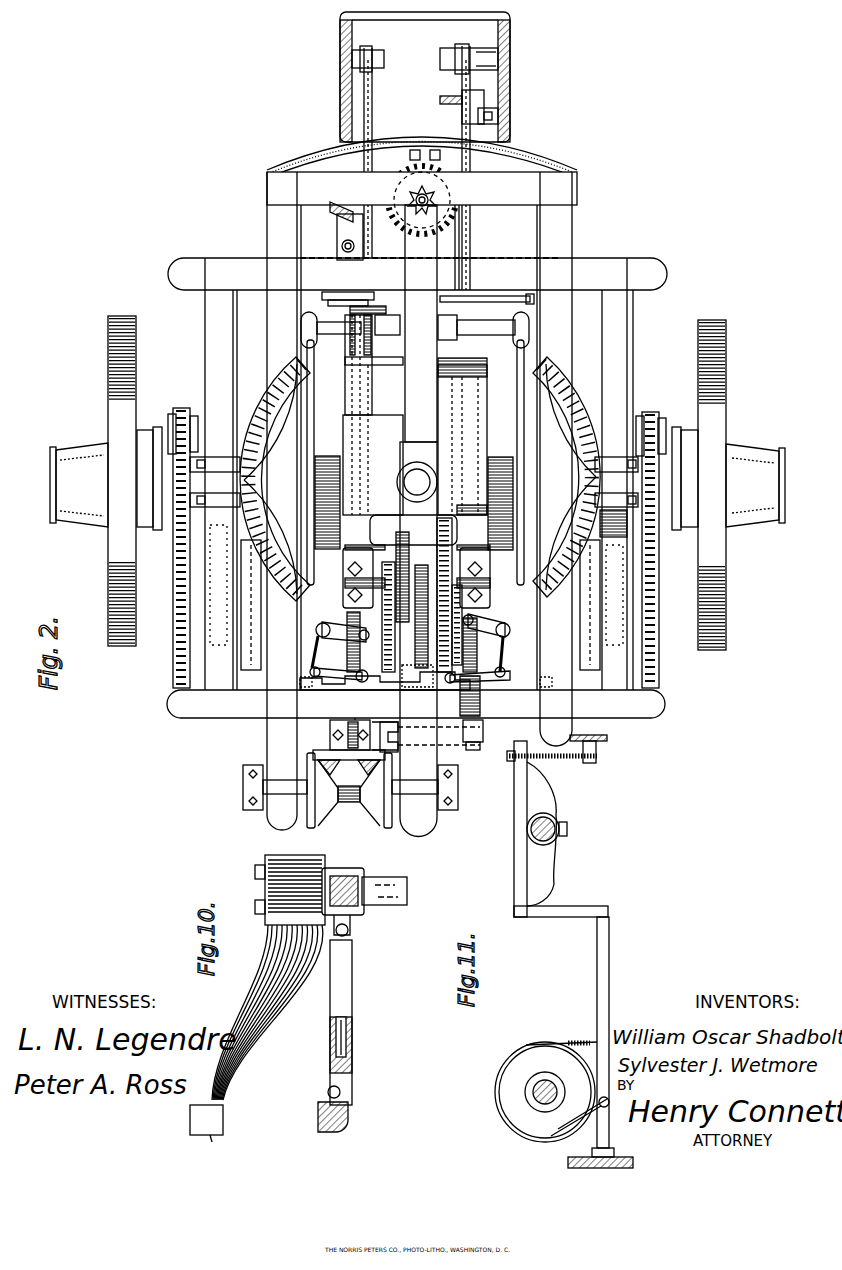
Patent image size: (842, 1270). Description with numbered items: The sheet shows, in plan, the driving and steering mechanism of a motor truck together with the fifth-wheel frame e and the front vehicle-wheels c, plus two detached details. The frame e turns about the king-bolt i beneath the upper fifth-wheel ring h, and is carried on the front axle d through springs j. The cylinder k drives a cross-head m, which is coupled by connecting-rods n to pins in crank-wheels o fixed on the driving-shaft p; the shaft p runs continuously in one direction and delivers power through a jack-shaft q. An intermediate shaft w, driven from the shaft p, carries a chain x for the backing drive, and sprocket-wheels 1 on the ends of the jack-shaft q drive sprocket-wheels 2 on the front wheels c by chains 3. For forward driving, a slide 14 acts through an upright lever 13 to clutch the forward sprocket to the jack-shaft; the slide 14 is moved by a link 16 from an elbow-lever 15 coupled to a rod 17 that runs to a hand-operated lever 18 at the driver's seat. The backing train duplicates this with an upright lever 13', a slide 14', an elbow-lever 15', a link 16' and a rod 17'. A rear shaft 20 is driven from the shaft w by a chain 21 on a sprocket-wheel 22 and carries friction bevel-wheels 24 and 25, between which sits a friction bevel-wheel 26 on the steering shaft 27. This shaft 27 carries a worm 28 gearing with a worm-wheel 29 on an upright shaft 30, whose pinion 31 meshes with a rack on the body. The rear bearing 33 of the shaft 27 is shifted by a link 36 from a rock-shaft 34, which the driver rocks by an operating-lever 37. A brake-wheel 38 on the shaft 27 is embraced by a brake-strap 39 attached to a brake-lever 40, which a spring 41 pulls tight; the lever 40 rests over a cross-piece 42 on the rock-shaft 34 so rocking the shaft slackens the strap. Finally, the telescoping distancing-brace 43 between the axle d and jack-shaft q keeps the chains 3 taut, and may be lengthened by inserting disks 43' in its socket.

In FIG. 2, the sprocket-wheel 1 is at (170, 706).
In FIG. 2, the sprocket-wheel 2 is at (170, 428).
In FIG. 2, the chain 3 is at (173, 580).
In FIG. 2, the upright lever 13 is at (477, 694).
In FIG. 2, the upright lever 13' is at (329, 659).
In FIG. 2, the slide 14 is at (511, 657).
In FIG. 2, the slide 14' is at (426, 691).
In FIG. 2, the elbow-lever 15 is at (479, 582).
In FIG. 2, the elbow-lever 15' is at (347, 582).
In FIG. 2, the link 16 is at (486, 641).
In FIG. 2, the link 16' is at (342, 646).
In FIG. 2, the rod 17 is at (458, 359).
In FIG. 2, the rod 17' is at (425, 342).
In FIG. 2, the hand-operated lever 18 is at (372, 52).
In FIG. 2, the shaft 20 is at (349, 789).
In FIG. 2, the chain 21 is at (408, 616).
In FIG. 2, the sprocket-wheel 22 is at (437, 595).
In FIG. 2, the friction bevel-wheel 24 is at (312, 810).
In FIG. 2, the friction bevel-wheel 25 is at (388, 810).
In FIG. 2, the friction bevel-wheel 26 is at (349, 766).
In FIG. 2, the shaft 27 is at (350, 342).
In FIG. 11, the shaft 27 is at (549, 1081).
In FIG. 2, the worm 28 is at (335, 231).
In FIG. 2, the worm-wheel 29 is at (413, 204).
In FIG. 2, the upright shaft 30 is at (424, 216).
In FIG. 2, the pinion 31 is at (465, 188).
In FIG. 2, the bearing 33 is at (330, 740).
In FIG. 2, the rock-shaft 34 is at (472, 228).
In FIG. 11, the rock-shaft 34 is at (555, 841).
In FIG. 2, the link 36 is at (462, 740).
In FIG. 2, the operating-lever 37 is at (458, 96).
In FIG. 2, the brake-wheel 38 is at (348, 310).
In FIG. 11, the brake-wheel 38 is at (530, 1092).
In FIG. 2, the brake-strap 39 is at (340, 293).
In FIG. 11, the brake-strap 39 is at (495, 1094).
In FIG. 11, the brake-lever 40 is at (598, 965).
In FIG. 11, the spring 41 is at (550, 759).
In FIG. 11, the cross-piece 42 is at (531, 858).
In FIG. 2, the distancing-brace 43 is at (426, 605).
In FIG. 10, the distancing-brace 43 is at (344, 986).
In FIG. 10, the disk 43' is at (318, 1057).
In FIG. 2, the front vehicle-wheel c is at (108, 383).
In FIG. 2, the front axle d is at (298, 484).
In FIG. 10, the front axle d is at (384, 881).
In FIG. 2, the fifth-wheel frame e is at (419, 504).
In FIG. 2, the upper fifth-wheel ring h is at (420, 479).
In FIG. 2, the king-bolt i is at (402, 476).
In FIG. 2, the spring j is at (414, 490).
In FIG. 10, the spring j is at (262, 966).
In FIG. 2, the cylinder k is at (378, 428).
In FIG. 2, the plate l is at (432, 525).
In FIG. 2, the cross-head m is at (490, 336).
In FIG. 2, the connecting-rod n is at (313, 400).
In FIG. 2, the crank-wheel o is at (412, 495).
In FIG. 2, the driving-shaft p is at (428, 428).
In FIG. 10, the jack-shaft q is at (326, 1126).
In FIG. 2, the intermediate shaft w is at (412, 617).
In FIG. 2, the chain x is at (395, 612).